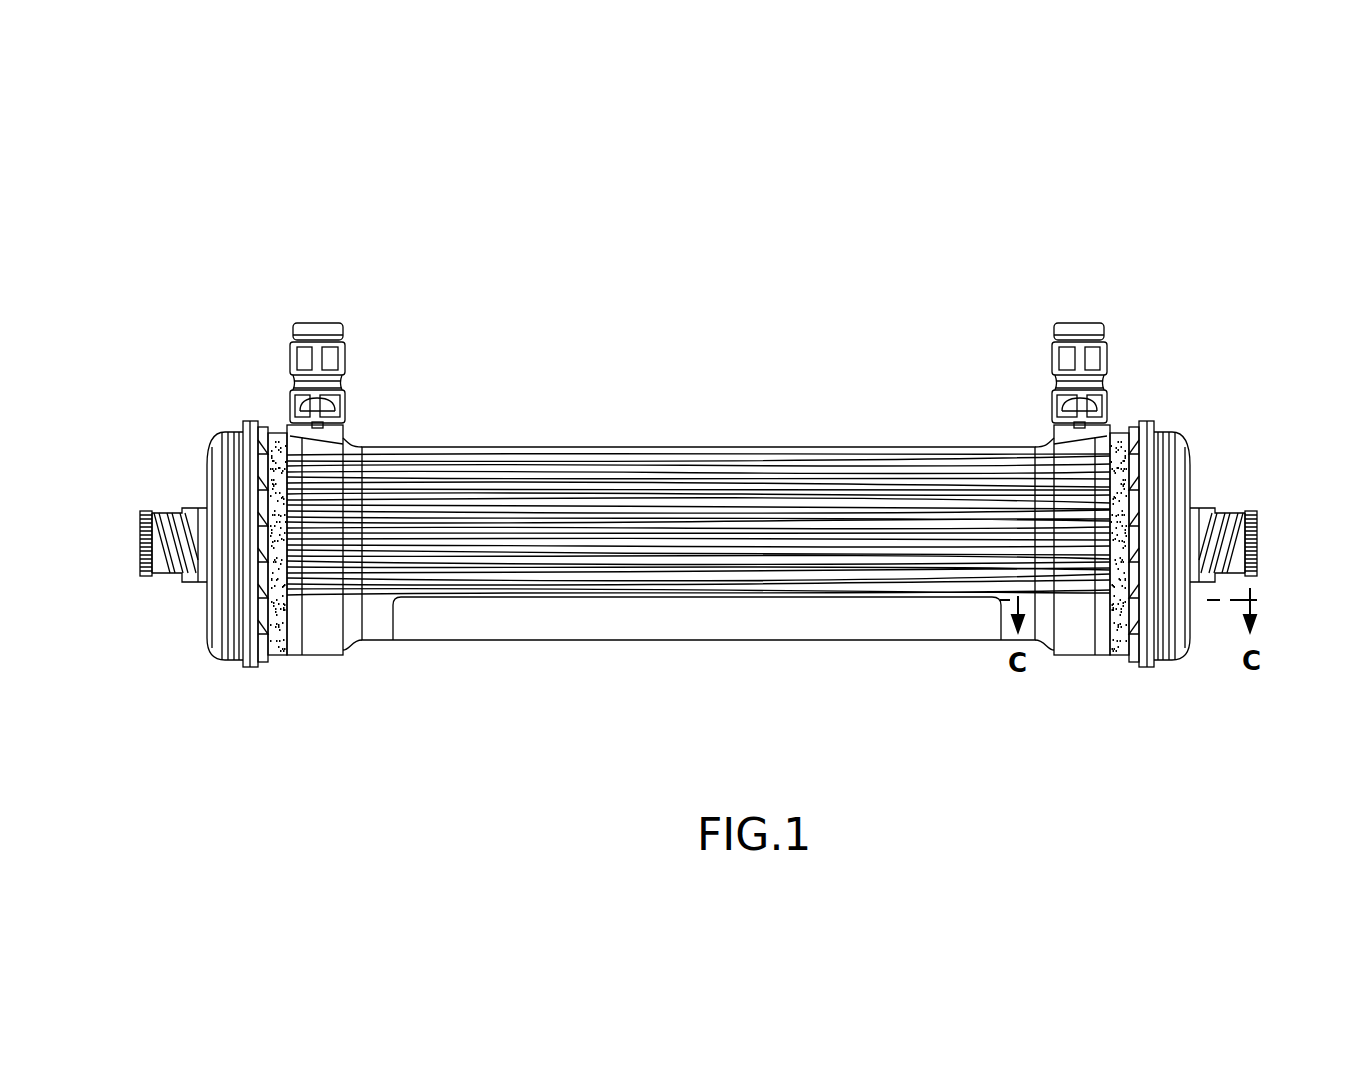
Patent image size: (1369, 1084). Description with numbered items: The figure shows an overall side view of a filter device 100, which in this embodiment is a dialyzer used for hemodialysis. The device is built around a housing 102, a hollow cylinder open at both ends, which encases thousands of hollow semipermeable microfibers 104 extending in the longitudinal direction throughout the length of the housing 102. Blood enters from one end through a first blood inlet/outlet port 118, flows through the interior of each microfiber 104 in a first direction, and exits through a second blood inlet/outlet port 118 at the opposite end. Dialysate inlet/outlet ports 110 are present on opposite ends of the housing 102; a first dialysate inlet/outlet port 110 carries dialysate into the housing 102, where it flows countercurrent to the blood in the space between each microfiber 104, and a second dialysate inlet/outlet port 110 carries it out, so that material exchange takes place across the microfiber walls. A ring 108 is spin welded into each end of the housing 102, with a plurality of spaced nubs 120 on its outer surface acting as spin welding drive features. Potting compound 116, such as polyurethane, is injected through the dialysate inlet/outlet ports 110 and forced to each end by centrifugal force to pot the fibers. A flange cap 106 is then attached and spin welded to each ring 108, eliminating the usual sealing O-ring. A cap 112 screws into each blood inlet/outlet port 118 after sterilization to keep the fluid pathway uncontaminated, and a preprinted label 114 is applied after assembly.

The filter device 100 is at (913, 252).
The housing 102 is at (600, 446).
The microfibers 104 is at (706, 476).
The flange cap 106 is at (210, 452).
The ring 108 is at (262, 424).
The dialysate inlet/outlet port 110 is at (315, 322).
The cap 112 is at (140, 553).
The label 114 is at (668, 628).
The potting compound 116 is at (285, 660).
The blood inlet/outlet port 118 is at (176, 520).
The nubs 120 is at (263, 602).